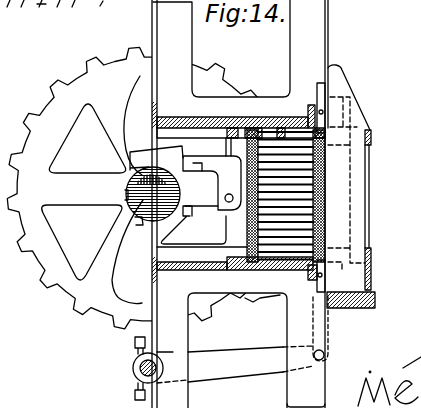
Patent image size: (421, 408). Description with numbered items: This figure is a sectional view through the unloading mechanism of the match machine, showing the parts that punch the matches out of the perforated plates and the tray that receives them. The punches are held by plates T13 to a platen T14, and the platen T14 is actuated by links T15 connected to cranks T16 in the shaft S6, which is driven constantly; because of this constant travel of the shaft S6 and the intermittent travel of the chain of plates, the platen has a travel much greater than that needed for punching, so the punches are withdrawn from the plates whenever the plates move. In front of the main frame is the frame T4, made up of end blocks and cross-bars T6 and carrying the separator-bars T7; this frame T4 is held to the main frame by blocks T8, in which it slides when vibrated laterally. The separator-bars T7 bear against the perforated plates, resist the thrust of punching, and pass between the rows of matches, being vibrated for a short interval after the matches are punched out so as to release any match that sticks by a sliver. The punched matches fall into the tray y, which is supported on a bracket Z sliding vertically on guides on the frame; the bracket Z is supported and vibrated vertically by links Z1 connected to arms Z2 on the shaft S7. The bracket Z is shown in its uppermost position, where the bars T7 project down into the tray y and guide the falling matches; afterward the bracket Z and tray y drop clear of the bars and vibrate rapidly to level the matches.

The shaft S6 is at (124, 212).
The shaft S7 is at (133, 369).
The frame T4 is at (388, 196).
The cross-bars T6 is at (371, 137).
The separator-bars T7 is at (341, 80).
The blocks T8 is at (350, 100).
The plates T13 is at (262, 130).
The platen T14 is at (222, 248).
The links T15 is at (210, 200).
The cranks T16 is at (129, 176).
The tray y is at (338, 287).
The bracket Z is at (355, 306).
The links Z1 is at (327, 357).
The arms Z2 is at (235, 364).